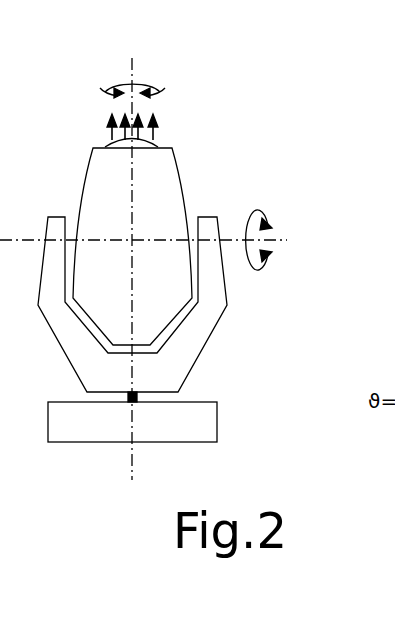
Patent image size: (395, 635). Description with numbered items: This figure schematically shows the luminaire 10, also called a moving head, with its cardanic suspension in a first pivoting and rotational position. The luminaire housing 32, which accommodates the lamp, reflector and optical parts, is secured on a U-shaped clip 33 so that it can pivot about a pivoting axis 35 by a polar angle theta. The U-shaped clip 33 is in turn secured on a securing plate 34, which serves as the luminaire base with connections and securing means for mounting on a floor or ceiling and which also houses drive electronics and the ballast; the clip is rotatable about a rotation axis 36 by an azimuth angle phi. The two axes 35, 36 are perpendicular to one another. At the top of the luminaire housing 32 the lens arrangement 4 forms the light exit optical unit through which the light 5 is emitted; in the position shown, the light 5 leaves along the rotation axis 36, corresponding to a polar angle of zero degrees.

The luminaire 10 is at (73, 98).
The lens arrangement 4 is at (108, 147).
The light 5 is at (163, 121).
The luminaire housing 32 is at (186, 180).
The U-shaped clip 33 is at (221, 318).
The securing plate 34 is at (217, 420).
The pivoting axis 35 is at (284, 228).
The rotation axis 36 is at (135, 91).